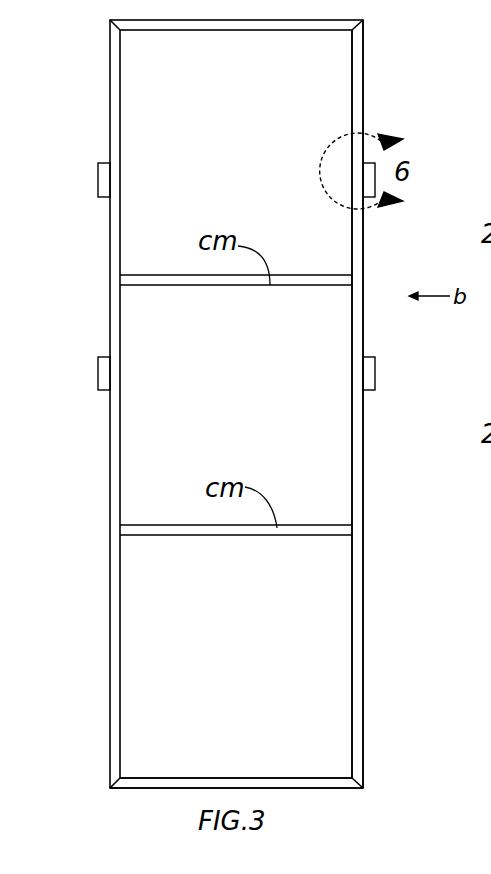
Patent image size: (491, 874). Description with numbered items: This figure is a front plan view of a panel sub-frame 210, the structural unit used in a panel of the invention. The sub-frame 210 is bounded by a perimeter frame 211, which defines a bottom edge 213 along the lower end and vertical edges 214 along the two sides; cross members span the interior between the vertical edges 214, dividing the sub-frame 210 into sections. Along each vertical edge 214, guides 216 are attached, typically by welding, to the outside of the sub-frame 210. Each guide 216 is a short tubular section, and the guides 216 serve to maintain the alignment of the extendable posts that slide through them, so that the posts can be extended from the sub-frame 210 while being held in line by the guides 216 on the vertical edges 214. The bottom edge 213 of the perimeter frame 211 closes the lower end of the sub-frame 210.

The sub-frame 210 is at (274, 404).
The perimeter frame 211 is at (352, 313).
The bottom edge 213 is at (315, 793).
The vertical edge 214 is at (490, 572).
The guide 216 is at (98, 178).